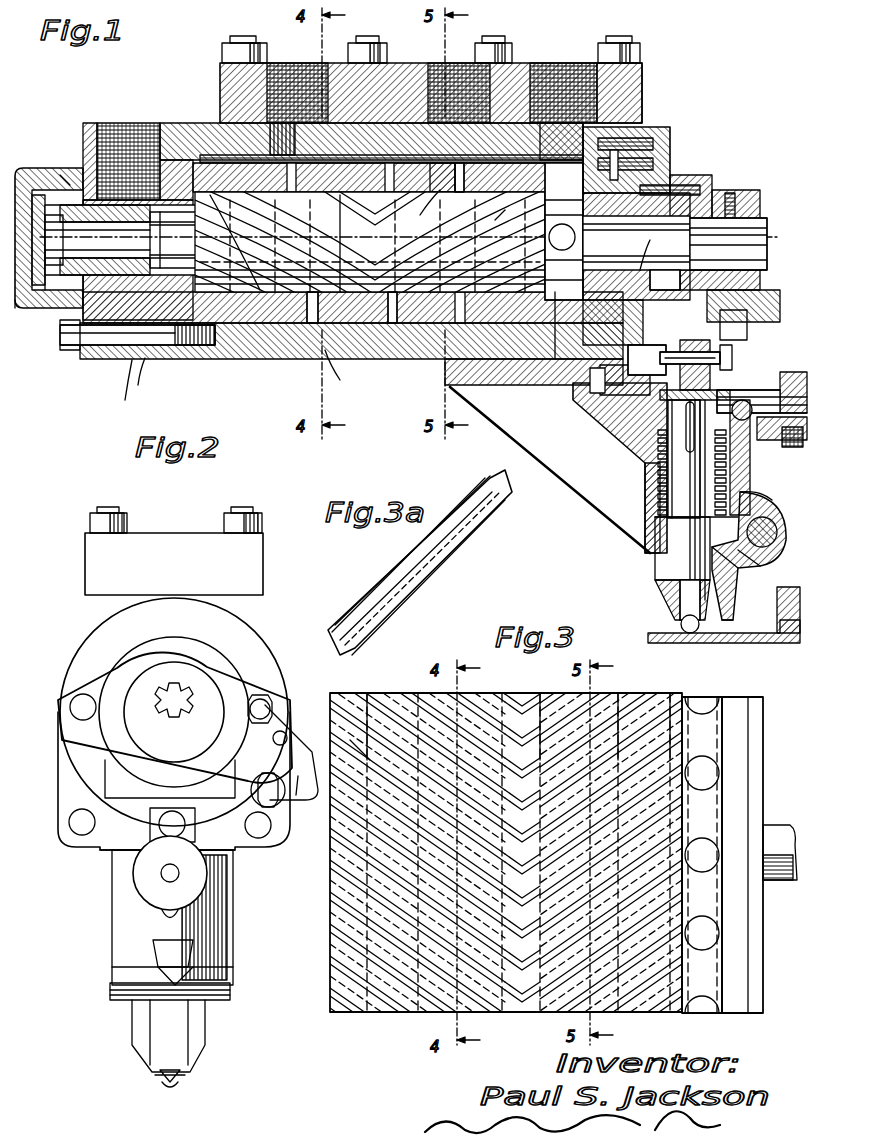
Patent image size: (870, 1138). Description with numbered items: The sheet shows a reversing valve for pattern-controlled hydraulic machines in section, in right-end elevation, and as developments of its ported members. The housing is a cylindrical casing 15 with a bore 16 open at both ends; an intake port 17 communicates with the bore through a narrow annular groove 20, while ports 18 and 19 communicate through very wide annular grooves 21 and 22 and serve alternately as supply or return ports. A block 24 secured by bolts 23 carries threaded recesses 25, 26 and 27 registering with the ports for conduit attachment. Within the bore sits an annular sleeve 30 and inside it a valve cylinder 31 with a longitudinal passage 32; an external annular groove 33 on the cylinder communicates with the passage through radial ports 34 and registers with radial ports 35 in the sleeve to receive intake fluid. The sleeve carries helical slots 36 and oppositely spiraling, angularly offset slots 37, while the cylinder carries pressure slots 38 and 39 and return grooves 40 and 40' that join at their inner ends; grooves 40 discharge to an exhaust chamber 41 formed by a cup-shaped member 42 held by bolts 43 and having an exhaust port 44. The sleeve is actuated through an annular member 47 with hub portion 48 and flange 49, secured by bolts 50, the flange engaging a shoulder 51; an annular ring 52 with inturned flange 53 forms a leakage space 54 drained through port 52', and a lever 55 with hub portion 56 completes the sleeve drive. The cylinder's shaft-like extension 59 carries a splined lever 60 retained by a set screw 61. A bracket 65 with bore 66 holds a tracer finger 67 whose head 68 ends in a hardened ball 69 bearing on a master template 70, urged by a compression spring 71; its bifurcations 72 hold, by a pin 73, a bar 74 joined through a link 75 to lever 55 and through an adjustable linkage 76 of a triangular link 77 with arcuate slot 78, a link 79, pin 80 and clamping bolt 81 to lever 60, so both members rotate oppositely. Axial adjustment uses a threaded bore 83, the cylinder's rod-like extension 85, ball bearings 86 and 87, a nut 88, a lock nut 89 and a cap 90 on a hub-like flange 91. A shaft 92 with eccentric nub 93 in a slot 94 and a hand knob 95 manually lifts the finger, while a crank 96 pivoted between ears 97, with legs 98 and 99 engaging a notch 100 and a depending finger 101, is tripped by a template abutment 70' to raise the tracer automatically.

In FIG. 1, the casing 15 is at (385, 360).
In FIG. 1, the bore 16 is at (225, 345).
In FIG. 1, the intake port 17 is at (561, 141).
In FIG. 1, the port 18 is at (470, 90).
In FIG. 1, the port 19 is at (300, 105).
In FIG. 1, the annular groove 20 is at (545, 375).
In FIG. 1, the annular groove 21 is at (410, 330).
In FIG. 1, the annular groove 22 is at (339, 300).
In FIG. 1, the bolts 23 is at (640, 48).
In FIG. 1, the block 24 is at (642, 70).
In FIG. 1, the threaded recess 25 is at (575, 80).
In FIG. 1, the threaded recess 26 is at (450, 110).
In FIG. 1, the threaded recess 27 is at (330, 75).
In FIG. 1, the sleeve 30 is at (360, 325).
In FIG. 3, the sleeve 30 is at (738, 710).
In FIG. 1, the valve cylinder 31 is at (232, 128).
In FIG. 1, the passage 32 is at (395, 350).
In FIG. 1, the external annular groove 33 is at (550, 326).
In FIG. 1, the radial ports 34 is at (562, 237).
In FIG. 1, the radial ports 35 is at (558, 360).
In FIG. 3, the radial ports 35 is at (698, 758).
In FIG. 1, the slots 36 is at (302, 168).
In FIG. 3, the slots 36 is at (380, 745).
In FIG. 1, the slots 37 is at (460, 175).
In FIG. 3A, the slots 37 is at (510, 505).
In FIG. 3, the slots 37 is at (658, 710).
In FIG. 1, the slots 38 is at (335, 205).
In FIG. 3, the slots 38 is at (362, 768).
In FIG. 1, the slots 39 is at (425, 218).
In FIG. 3A, the slots 39 is at (485, 480).
In FIG. 3, the slots 39 is at (565, 705).
In FIG. 1, the grooves 40 is at (235, 242).
In FIG. 3, the grooves 40 is at (364, 716).
In FIG. 1, the grooves 40' is at (503, 226).
In FIG. 3A, the grooves 40' is at (422, 555).
In FIG. 3, the grooves 40' is at (627, 716).
In FIG. 1, the exhaust chamber 41 is at (170, 345).
In FIG. 1, the cup-shaped member 42 is at (148, 379).
In FIG. 1, the bolts 43 is at (127, 386).
In FIG. 1, the port 44 is at (148, 140).
In FIG. 1, the annular member 47 is at (652, 247).
In FIG. 1, the hub portion 48 is at (600, 232).
In FIG. 1, the flange 49 is at (564, 231).
In FIG. 1, the bolts 50 is at (665, 163).
In FIG. 1, the shoulder 51 is at (640, 100).
In FIG. 1, the annular ring 52 is at (618, 468).
In FIG. 1, the port 52' is at (659, 343).
In FIG. 1, the inturned flange 53 is at (662, 275).
In FIG. 1, the annular space 54 is at (619, 347).
In FIG. 2, the lever 55 is at (95, 678).
In FIG. 1, the hub portion 56 is at (705, 178).
In FIG. 1, the shaft-like extension 59 is at (770, 222).
In FIG. 2, the shaft-like extension 59 is at (174, 702).
In FIG. 2, the lever 60 is at (234, 695).
In FIG. 3, the lever 60 is at (775, 828).
In FIG. 1, the set screw 61 is at (728, 195).
In FIG. 1, the bracket 65 is at (592, 485).
In FIG. 1, the bore 66 is at (722, 480).
In FIG. 1, the tracer finger 67 is at (655, 517).
In FIG. 1, the head 68 is at (738, 570).
In FIG. 1, the ball 69 is at (680, 620).
In FIG. 1, the master template 70 is at (724, 644).
In FIG. 1, the abutment 70' is at (792, 615).
In FIG. 1, the compression spring 71 is at (648, 486).
In FIG. 1, the bifurcations 72 is at (732, 360).
In FIG. 1, the pin 73 is at (720, 355).
In FIG. 2, the pin 73 is at (168, 815).
In FIG. 1, the bar 74 is at (712, 380).
In FIG. 2, the bar 74 is at (228, 860).
In FIG. 2, the link 75 is at (68, 785).
In FIG. 2, the linkage 76 is at (232, 768).
In FIG. 2, the link 77 is at (300, 755).
In FIG. 2, the arcuate slot 78 is at (280, 818).
In FIG. 2, the link 79 is at (296, 800).
In FIG. 2, the pin 80 is at (287, 733).
In FIG. 2, the bolt 81 is at (280, 840).
In FIG. 1, the threaded bore 83 is at (130, 268).
In FIG. 1, the rod-like extension 85 is at (122, 240).
In FIG. 1, the ball bearing 86 is at (140, 200).
In FIG. 1, the ball bearing 87 is at (40, 168).
In FIG. 1, the nut 88 is at (18, 308).
In FIG. 1, the lock nut 89 is at (60, 200).
In FIG. 1, the cap 90 is at (45, 308).
In FIG. 1, the hub-like flange 91 is at (62, 175).
In FIG. 1, the shaft 92 is at (765, 410).
In FIG. 1, the nub 93 is at (793, 447).
In FIG. 1, the slot 94 is at (755, 440).
In FIG. 1, the hand knob 95 is at (785, 380).
In FIG. 1, the crank 96 is at (778, 524).
In FIG. 2, the crank 96 is at (195, 970).
In FIG. 2, the ears 97 is at (125, 995).
In FIG. 1, the first leg 98 is at (776, 494).
In FIG. 2, the first leg 98 is at (158, 957).
In FIG. 1, the second leg 99 is at (762, 556).
In FIG. 1, the notch 100 is at (690, 568).
In FIG. 1, the finger 101 is at (732, 595).
In FIG. 2, the finger 101 is at (172, 1043).